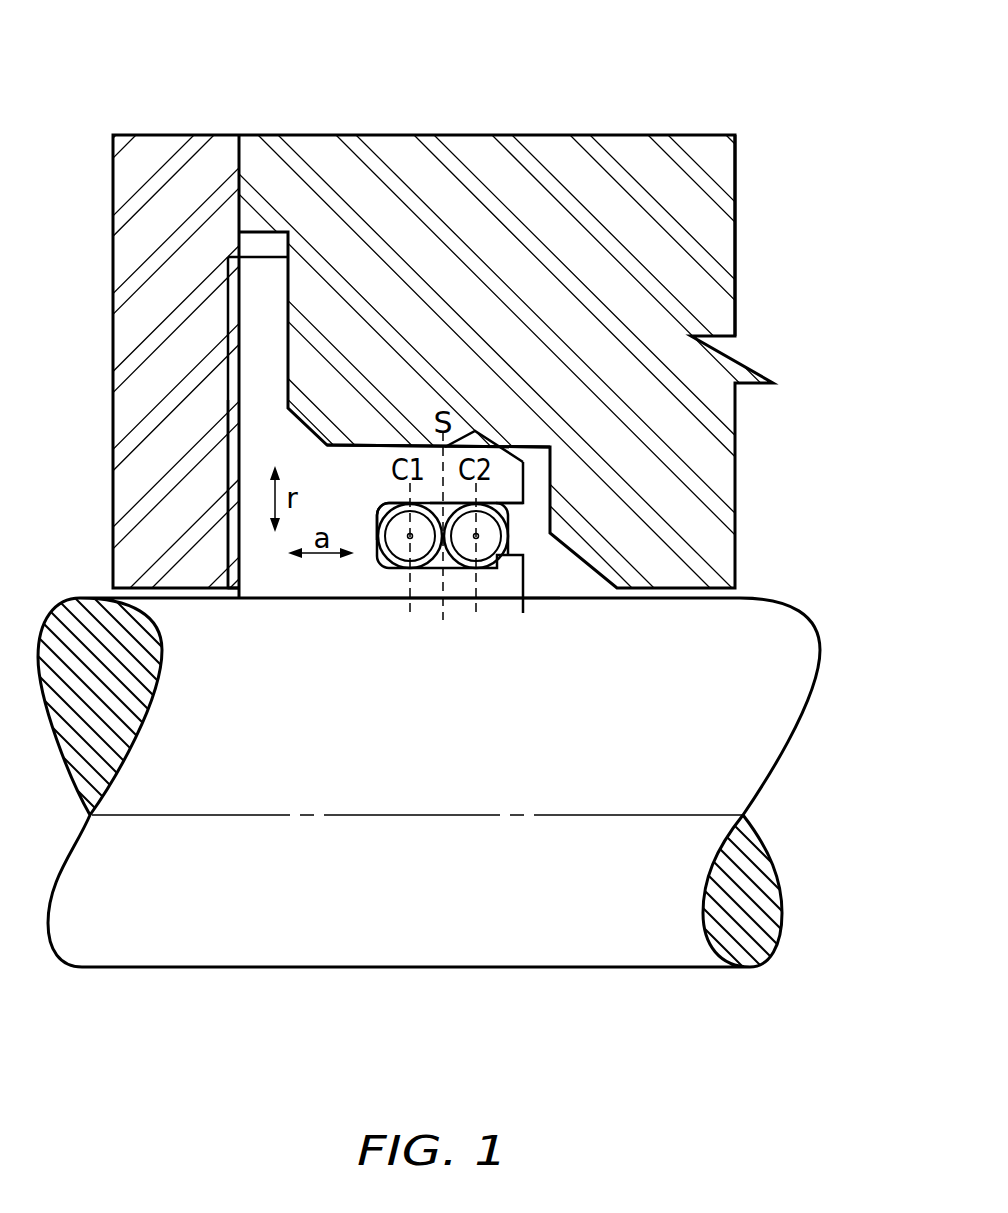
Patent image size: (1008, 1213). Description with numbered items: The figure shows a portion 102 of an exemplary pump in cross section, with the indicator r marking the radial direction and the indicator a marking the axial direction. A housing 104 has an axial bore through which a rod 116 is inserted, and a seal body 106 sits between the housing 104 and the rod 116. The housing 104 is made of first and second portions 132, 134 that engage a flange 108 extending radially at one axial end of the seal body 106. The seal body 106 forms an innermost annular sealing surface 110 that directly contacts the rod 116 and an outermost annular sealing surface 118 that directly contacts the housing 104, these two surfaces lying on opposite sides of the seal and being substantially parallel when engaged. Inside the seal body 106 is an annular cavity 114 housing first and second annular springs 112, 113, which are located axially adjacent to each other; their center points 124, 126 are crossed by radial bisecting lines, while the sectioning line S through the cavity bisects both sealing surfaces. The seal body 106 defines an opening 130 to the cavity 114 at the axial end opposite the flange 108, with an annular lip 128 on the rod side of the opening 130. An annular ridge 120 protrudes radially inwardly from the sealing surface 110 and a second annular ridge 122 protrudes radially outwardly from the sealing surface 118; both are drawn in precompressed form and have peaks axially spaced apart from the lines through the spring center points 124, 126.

The portion of pump 102 is at (122, 63).
The housing 104 is at (648, 135).
The seal body 106 is at (245, 495).
The flange 108 is at (255, 293).
The annular sealing surface 110 is at (278, 596).
The first annular spring 112 is at (515, 540).
The second annular spring 113 is at (393, 506).
The annular cavity 114 is at (437, 578).
The rod 116 is at (752, 696).
The annular sealing surface 118 is at (408, 446).
The annular ridge 120 is at (418, 597).
The second annular ridge 122 is at (475, 432).
The spring center point 124 is at (410, 536).
The spring center point 126 is at (476, 536).
The annular lip 128 is at (511, 552).
The opening 130 is at (520, 522).
The first portion of housing 132 is at (735, 185).
The second portion of housing 134 is at (113, 185).